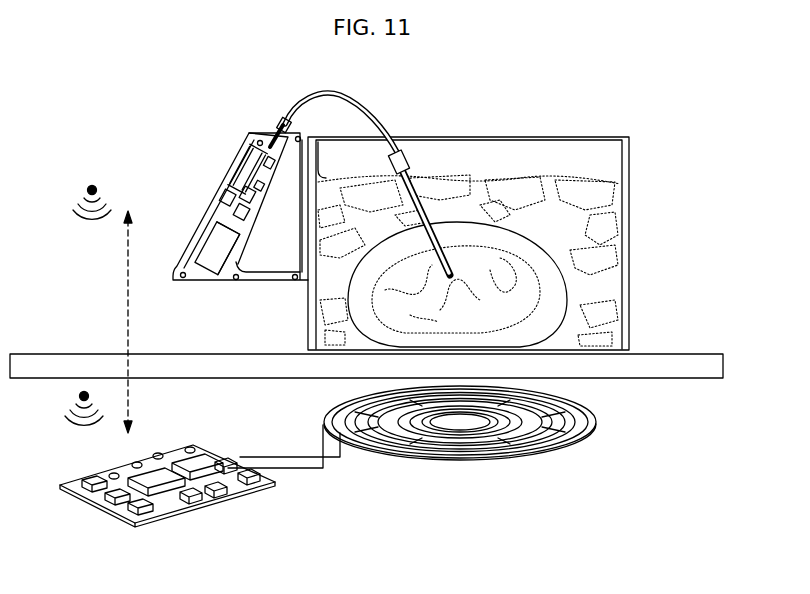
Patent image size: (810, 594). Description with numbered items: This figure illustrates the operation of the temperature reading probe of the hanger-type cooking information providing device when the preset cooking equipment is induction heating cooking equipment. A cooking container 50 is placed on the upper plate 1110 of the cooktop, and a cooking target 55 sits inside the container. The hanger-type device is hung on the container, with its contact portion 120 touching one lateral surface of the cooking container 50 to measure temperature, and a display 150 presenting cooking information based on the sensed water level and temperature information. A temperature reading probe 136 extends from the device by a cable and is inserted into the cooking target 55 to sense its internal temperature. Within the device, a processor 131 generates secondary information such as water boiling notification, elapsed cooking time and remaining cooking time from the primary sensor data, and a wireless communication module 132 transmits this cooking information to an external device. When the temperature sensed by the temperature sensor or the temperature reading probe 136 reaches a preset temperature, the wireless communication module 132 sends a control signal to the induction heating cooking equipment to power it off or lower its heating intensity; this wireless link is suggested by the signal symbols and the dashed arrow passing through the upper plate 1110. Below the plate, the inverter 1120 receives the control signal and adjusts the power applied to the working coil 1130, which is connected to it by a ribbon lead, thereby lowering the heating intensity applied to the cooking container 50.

The cooking container 50 is at (628, 137).
The cooking target 55 is at (478, 230).
The temperature reading probe 136 is at (347, 98).
The contact portion 120 is at (203, 198).
The display 150 is at (232, 162).
The processor 131 is at (228, 190).
The wireless communication module 132 is at (292, 203).
The upper plate 1110 is at (685, 365).
The working coil 1130 is at (590, 430).
The inverter 1120 is at (163, 502).